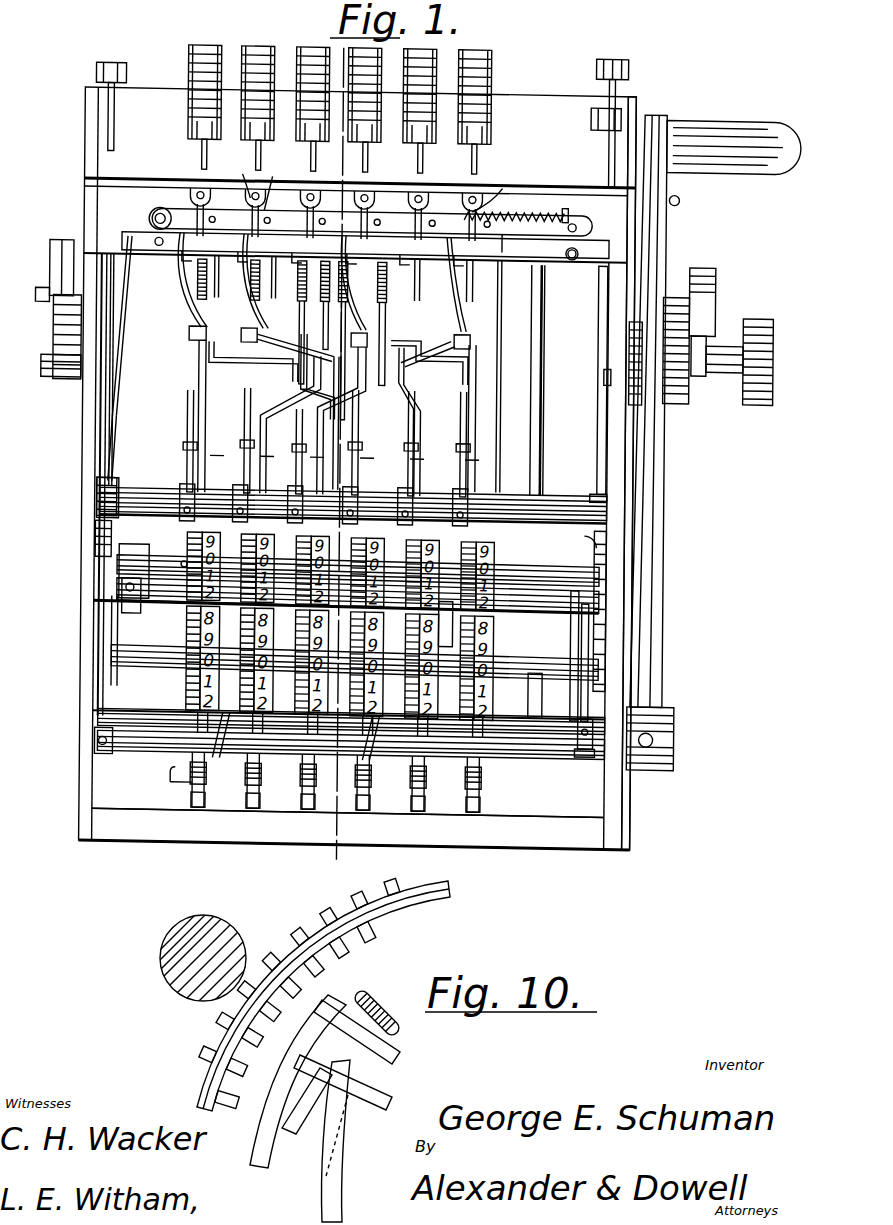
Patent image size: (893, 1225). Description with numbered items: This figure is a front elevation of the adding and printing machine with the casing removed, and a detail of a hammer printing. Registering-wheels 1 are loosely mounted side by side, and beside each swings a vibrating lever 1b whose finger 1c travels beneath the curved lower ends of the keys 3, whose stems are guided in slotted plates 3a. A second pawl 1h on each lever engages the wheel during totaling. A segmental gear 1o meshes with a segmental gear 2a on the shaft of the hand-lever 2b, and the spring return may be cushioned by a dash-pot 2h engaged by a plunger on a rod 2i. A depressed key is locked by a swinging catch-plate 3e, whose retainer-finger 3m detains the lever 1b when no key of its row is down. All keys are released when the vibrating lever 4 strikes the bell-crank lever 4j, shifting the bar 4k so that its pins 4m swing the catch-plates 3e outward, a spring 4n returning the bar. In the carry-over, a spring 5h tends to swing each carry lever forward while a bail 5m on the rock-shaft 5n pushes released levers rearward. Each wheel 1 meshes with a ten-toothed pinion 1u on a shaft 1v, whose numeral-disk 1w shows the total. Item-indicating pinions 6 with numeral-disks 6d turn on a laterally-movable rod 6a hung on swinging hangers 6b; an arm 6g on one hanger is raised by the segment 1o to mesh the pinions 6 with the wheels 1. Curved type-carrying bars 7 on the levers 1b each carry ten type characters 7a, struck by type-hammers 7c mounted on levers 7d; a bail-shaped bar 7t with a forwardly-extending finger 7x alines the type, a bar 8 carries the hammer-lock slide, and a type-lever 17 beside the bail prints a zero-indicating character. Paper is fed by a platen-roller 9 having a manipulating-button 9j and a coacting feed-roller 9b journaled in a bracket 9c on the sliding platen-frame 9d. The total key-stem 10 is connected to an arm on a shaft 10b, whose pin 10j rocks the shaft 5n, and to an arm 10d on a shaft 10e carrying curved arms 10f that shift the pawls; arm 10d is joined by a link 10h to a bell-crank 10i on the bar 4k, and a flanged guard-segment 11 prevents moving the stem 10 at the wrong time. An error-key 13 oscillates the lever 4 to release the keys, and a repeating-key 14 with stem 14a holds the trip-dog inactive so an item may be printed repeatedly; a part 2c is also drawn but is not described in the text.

In FIG. 1, the registering-wheel 1 is at (276, 548).
In FIG. 1, the vibrating lever 1b is at (245, 436).
In FIG. 1, the finger 1c is at (175, 372).
In FIG. 1, the second pawl 1h is at (232, 478).
In FIG. 1, the segmental gear 1o is at (565, 590).
In FIG. 1, the pinion 1u is at (190, 552).
In FIG. 1, the shaft 1v is at (490, 568).
In FIG. 1, the numeral-disk 1w is at (480, 512).
In FIG. 1, the segmental gear 2a is at (578, 692).
In FIG. 1, the hand-lever 2b is at (650, 480).
In FIG. 1, the bottom plate 2c is at (530, 803).
In FIG. 1, the dash-pot 2h is at (554, 655).
In FIG. 1, the rod 2i is at (532, 382).
In FIG. 1, the key 3 is at (220, 56).
In FIG. 1, the slotted plate 3a is at (499, 190).
In FIG. 1, the catch-plate 3e is at (235, 175).
In FIG. 1, the retainer-finger 3m is at (238, 300).
In FIG. 1, the vibrating lever 4 is at (358, 860).
In FIG. 1, the bell-crank lever 4j is at (577, 256).
In FIG. 1, the bar 4k is at (512, 236).
In FIG. 1, the pin 4m is at (283, 182).
In FIG. 1, the spring 4n is at (548, 205).
In FIG. 1, the spring 5h is at (428, 775).
In FIG. 1, the bail 5m is at (175, 790).
In FIG. 1, the rock-shaft 5n is at (526, 696).
In FIG. 1, the pinion 6 is at (185, 688).
In FIG. 1, the rod 6a is at (158, 652).
In FIG. 1, the hanger 6b is at (597, 615).
In FIG. 1, the numeral-disk 6d is at (295, 749).
In FIG. 1, the arm 6g is at (612, 536).
In FIG. 1, the type-carrying bar 7 is at (296, 292).
In FIG. 10, the type-carrying bar 7 is at (323, 996).
In FIG. 10, the type character 7a is at (383, 930).
In FIG. 10, the type-hammer 7c is at (393, 1092).
In FIG. 1, the lever 7d is at (492, 624).
In FIG. 10, the lever 7d is at (368, 1128).
In FIG. 10, the bail-shaped bar 7t is at (215, 1075).
In FIG. 10, the finger 7x is at (344, 1178).
In FIG. 10, the bar 8 is at (382, 1012).
In FIG. 1, the platen-roller 9 is at (684, 392).
In FIG. 10, the platen-roller 9 is at (180, 988).
In FIG. 1, the feed-roller 9b is at (700, 300).
In FIG. 1, the bracket 9c is at (705, 330).
In FIG. 1, the platen-frame 9d is at (700, 262).
In FIG. 1, the finger manipulating-button 9j is at (756, 398).
In FIG. 1, the key-stem 10 is at (107, 70).
In FIG. 1, the shaft 10b is at (150, 760).
In FIG. 1, the arm 10d is at (112, 486).
In FIG. 1, the shaft 10e is at (590, 496).
In FIG. 1, the curved arm 10f is at (228, 410).
In FIG. 1, the link 10h is at (116, 408).
In FIG. 1, the bell-crank 10i is at (145, 250).
In FIG. 1, the pin 10j is at (585, 755).
In FIG. 1, the guard-segment 11 is at (98, 533).
In FIG. 1, the error-key 13 is at (626, 68).
In FIG. 1, the repeating-key 14 is at (588, 114).
In FIG. 1, the stem 14a is at (585, 468).
In FIG. 10, the type-lever 17 is at (306, 1101).